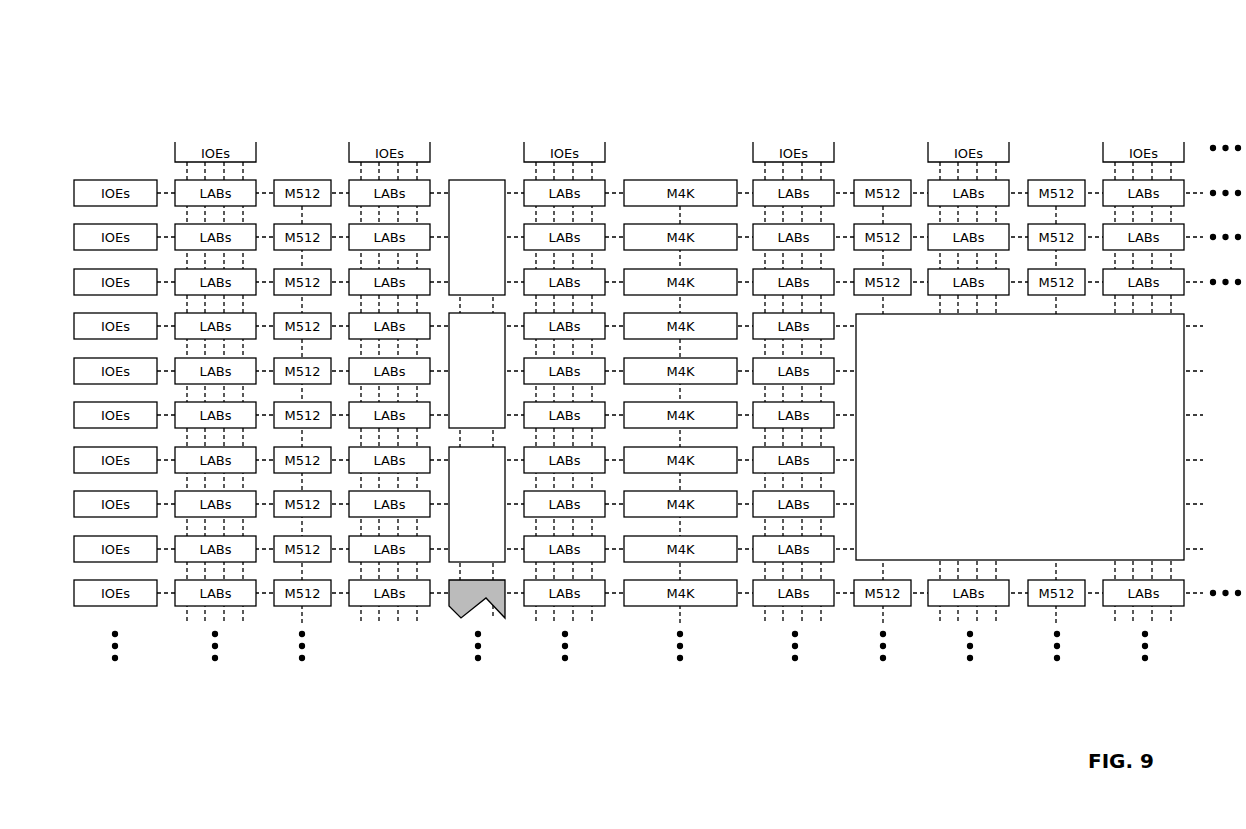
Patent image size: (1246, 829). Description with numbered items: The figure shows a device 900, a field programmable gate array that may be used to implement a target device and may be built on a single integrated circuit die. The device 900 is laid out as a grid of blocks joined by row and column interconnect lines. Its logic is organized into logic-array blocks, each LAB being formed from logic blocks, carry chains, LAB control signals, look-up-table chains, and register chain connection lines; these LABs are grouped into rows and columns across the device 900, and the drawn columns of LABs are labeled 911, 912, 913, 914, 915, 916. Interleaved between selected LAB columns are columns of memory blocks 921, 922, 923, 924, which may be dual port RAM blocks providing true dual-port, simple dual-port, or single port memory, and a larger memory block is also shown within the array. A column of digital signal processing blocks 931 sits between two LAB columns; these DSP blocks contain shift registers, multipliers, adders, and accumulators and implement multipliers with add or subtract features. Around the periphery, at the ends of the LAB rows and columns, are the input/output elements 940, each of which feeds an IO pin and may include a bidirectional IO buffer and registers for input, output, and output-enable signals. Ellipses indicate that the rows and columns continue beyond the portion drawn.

The device 900 is at (137, 105).
The input/output elements 940 is at (170, 155).
The column of LABs 911 is at (203, 634).
The column of LABs 912 is at (378, 634).
The column of LABs 913 is at (552, 634).
The column of LABs 914 is at (768, 634).
The column of LABs 915 is at (952, 634).
The column of LABs 916 is at (1127, 634).
The column of memory blocks 921 is at (318, 171).
The column of memory blocks 922 is at (682, 171).
The column of memory blocks 923 is at (892, 171).
The column of memory blocks 924 is at (1063, 171).
The column of DSP blocks 931 is at (487, 171).